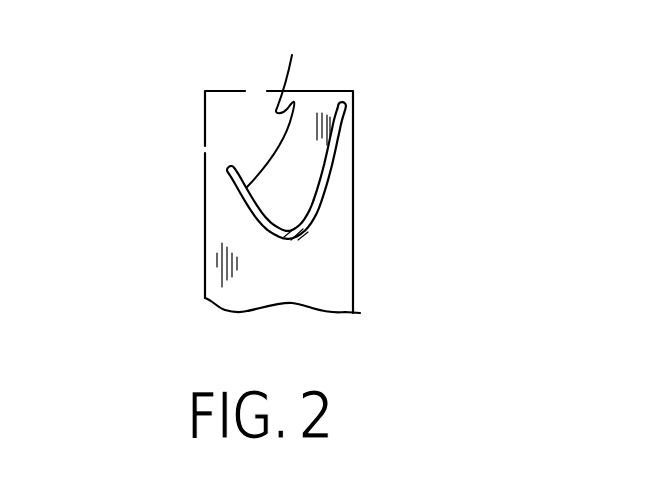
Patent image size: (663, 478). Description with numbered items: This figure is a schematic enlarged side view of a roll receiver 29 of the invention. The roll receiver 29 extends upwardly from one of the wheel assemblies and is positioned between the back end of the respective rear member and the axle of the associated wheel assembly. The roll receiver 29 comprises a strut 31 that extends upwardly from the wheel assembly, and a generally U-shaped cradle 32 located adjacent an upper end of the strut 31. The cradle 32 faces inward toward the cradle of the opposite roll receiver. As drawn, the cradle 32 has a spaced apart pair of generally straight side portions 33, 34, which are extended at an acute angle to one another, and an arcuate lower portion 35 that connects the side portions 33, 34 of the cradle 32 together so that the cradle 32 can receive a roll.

The roll receiver 29 is at (398, 95).
The strut 31 is at (205, 222).
The cradle 32 is at (241, 191).
The side portion 33 is at (280, 101).
The side portion 34 is at (320, 200).
The arcuate lower portion 35 is at (273, 229).